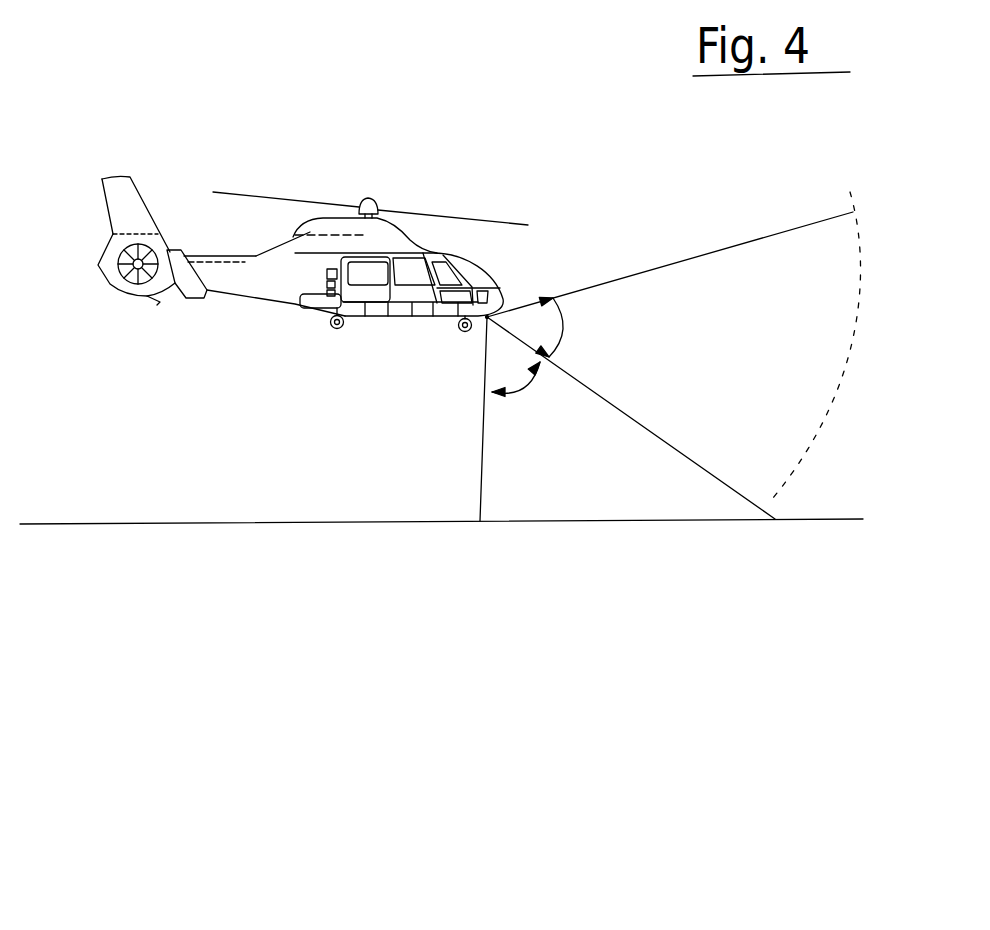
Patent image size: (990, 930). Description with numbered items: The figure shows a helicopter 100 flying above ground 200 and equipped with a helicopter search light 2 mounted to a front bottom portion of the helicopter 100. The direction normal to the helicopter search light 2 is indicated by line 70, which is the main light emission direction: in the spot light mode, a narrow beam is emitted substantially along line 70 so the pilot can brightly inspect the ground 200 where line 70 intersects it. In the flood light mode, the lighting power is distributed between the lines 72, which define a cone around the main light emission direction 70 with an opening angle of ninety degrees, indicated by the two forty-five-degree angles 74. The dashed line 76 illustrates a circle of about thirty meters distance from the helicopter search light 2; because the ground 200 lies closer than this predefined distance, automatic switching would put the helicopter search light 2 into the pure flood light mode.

The helicopter 100 is at (322, 337).
The ground 200 is at (297, 523).
The helicopter search light 2 is at (486, 320).
The line indicating main light emission direction 70 is at (630, 415).
The lines defining cone 72 is at (692, 258).
The 45° angles 74 is at (558, 335).
The dashed line illustrating circle of about 30 m distance 76 is at (863, 278).